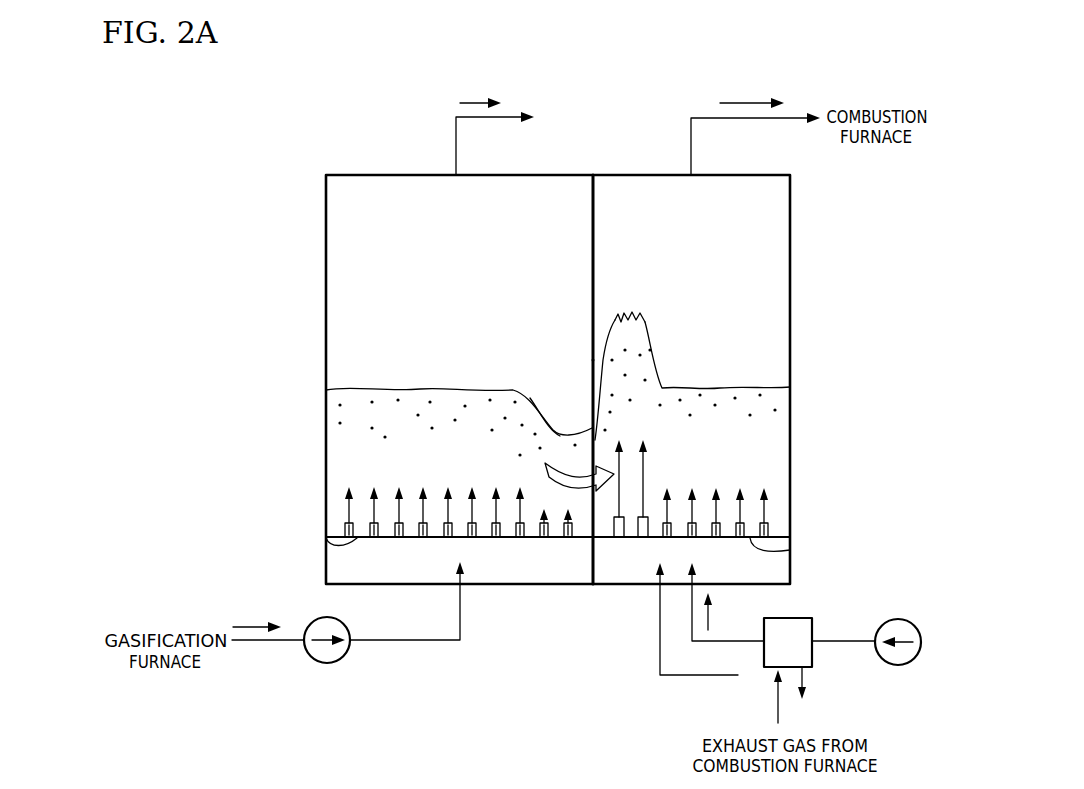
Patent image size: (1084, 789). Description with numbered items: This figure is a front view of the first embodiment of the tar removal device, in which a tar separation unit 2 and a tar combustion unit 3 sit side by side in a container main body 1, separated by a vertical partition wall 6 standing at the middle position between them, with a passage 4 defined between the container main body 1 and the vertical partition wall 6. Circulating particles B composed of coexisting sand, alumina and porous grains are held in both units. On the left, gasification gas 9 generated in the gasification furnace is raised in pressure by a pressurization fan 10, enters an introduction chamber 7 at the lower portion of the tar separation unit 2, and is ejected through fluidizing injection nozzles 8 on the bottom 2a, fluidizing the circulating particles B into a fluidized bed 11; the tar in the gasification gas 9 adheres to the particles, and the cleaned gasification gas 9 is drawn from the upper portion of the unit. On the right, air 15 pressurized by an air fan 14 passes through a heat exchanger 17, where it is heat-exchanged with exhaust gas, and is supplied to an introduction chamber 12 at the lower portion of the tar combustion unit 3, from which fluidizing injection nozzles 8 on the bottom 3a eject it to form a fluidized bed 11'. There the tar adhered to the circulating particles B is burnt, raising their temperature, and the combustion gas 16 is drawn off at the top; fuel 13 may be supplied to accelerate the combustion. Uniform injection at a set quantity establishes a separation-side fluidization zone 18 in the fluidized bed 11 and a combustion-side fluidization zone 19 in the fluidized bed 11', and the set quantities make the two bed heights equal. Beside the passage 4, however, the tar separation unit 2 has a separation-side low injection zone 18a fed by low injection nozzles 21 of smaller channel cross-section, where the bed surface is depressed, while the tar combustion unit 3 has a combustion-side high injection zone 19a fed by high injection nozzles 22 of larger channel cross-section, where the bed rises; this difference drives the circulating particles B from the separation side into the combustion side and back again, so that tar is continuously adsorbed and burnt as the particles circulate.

The container main body 1 is at (326, 183).
The tar separation unit 2 is at (370, 260).
The bottom of tar separation unit 2a is at (333, 540).
The tar combustion unit 3 is at (758, 273).
The bottom of tar combustion unit 3a is at (790, 550).
The passage 4 is at (568, 515).
The vertical partition wall 6 is at (590, 205).
The introduction chamber 7 is at (501, 570).
The fluidizing injection nozzles 8 is at (372, 522).
The gasification gas 9 is at (460, 103).
The pressurization fan 10 is at (327, 663).
The fluidized bed 11 is at (466, 353).
The fluidized bed 11' is at (700, 353).
The introduction chamber 12 is at (625, 570).
The fuel 13 is at (700, 677).
The air fan 14 is at (898, 665).
The air 15 is at (710, 625).
The combustion gas 16 is at (748, 103).
The heat exchanger 17 is at (812, 618).
The separation-side fluidization zone 18 is at (417, 380).
The separation-side low injection zone 18a is at (566, 420).
The combustion-side fluidization zone 19 is at (752, 378).
The combustion-side high injection zone 19a is at (632, 307).
The low injection nozzles 21 is at (562, 527).
The high injection nozzles 22 is at (621, 517).
The circulating particles B is at (503, 400).